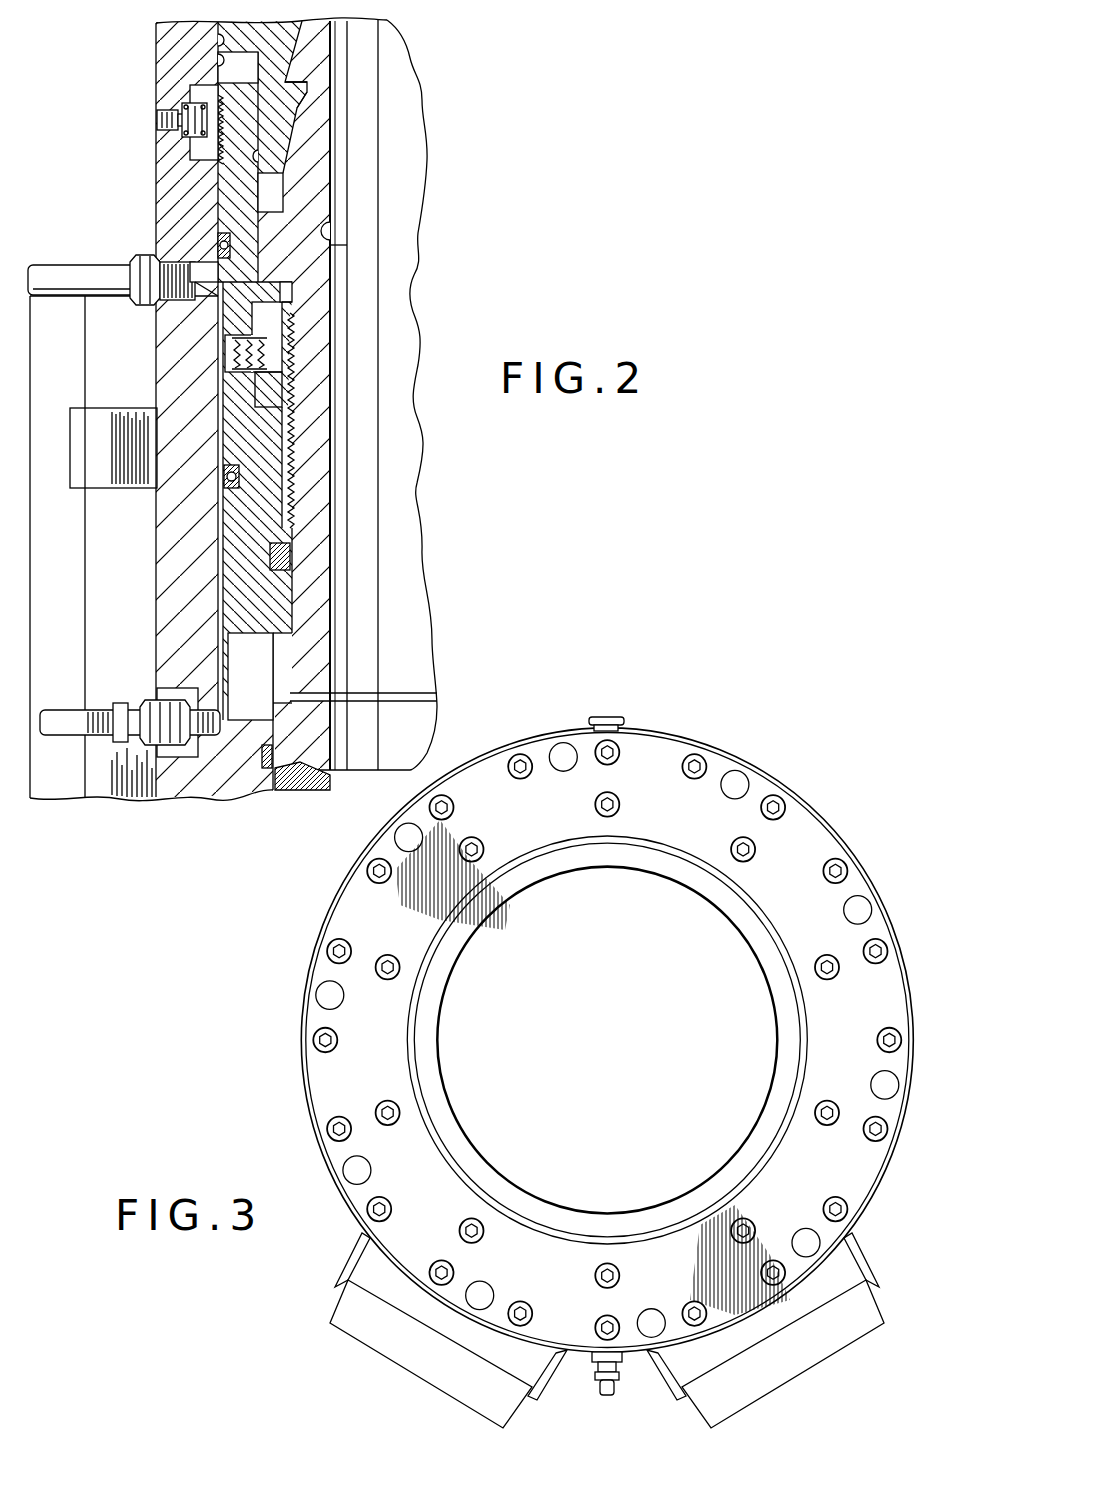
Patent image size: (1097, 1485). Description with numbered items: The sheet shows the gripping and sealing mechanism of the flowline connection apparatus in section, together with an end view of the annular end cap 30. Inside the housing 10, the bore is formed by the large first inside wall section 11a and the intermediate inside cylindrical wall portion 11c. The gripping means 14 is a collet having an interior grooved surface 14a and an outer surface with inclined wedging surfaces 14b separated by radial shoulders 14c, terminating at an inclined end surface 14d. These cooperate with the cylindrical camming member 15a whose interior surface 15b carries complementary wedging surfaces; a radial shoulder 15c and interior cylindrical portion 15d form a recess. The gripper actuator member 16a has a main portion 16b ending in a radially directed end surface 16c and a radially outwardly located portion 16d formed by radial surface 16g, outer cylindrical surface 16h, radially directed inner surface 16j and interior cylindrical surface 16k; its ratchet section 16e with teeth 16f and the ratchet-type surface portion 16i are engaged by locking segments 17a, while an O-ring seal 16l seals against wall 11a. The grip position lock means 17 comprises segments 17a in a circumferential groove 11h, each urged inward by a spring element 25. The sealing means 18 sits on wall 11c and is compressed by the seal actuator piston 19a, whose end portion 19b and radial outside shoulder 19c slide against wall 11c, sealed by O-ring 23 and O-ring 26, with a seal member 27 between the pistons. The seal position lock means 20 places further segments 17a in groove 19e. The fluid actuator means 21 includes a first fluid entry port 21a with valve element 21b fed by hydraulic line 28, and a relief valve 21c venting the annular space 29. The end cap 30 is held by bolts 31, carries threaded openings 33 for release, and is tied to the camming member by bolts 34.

In FIG. 2, the housing 10 is at (150, 593).
In FIG. 2, the first inside wall section 11a is at (213, 35).
In FIG. 2, the inside cylindrical wall portion 11c is at (287, 792).
In FIG. 2, the circumferential groove 11h is at (208, 88).
In FIG. 2, the gripping means 14 is at (322, 145).
In FIG. 2, the interior grooved surface 14a is at (332, 173).
In FIG. 2, the inclined wedging surfaces 14b is at (300, 118).
In FIG. 2, the radial shoulders 14c is at (302, 94).
In FIG. 2, the inclined end surface 14d is at (333, 245).
In FIG. 2, the cylindrical camming member 15a is at (290, 32).
In FIG. 2, the interior surface of camming member 15b is at (290, 66).
In FIG. 2, the radial shoulder 15c is at (226, 52).
In FIG. 2, the interior cylindrical portion 15d is at (255, 67).
In FIG. 2, the gripper actuator member 16a is at (302, 455).
In FIG. 2, the main portion 16b is at (317, 543).
In FIG. 2, the radially directed end surface 16c is at (330, 225).
In FIG. 2, the radially outwardly located portion 16d is at (238, 197).
In FIG. 2, the ratchet section 16e is at (293, 433).
In FIG. 2, the ratchet teeth 16f is at (278, 320).
In FIG. 2, the radial surface 16g is at (424, 278).
In FIG. 2, the outer cylindrical surface 16h is at (217, 242).
In FIG. 2, the ratchet-type surface portion 16i is at (208, 178).
In FIG. 2, the radially directed inner surface 16j is at (283, 200).
In FIG. 2, the interior cylindrical surface 16k is at (260, 156).
In FIG. 2, the O-ring seal 16l is at (218, 250).
In FIG. 2, the grip position lock means 17 is at (157, 118).
In FIG. 2, the locking segments 17a is at (272, 397).
In FIG. 2, the sealing means 18 is at (307, 783).
In FIG. 2, the seal actuator piston 19a is at (275, 612).
In FIG. 2, the seal actuator end portion 19b is at (312, 728).
In FIG. 2, the radial outside shoulder 19c is at (247, 640).
In FIG. 2, the circumferential groove 19e is at (252, 383).
In FIG. 2, the seal position lock means 20 is at (298, 381).
In FIG. 2, the fluid actuator means 21 is at (148, 310).
In FIG. 2, the first fluid entry port 21a is at (208, 293).
In FIG. 2, the valve element 21b is at (133, 288).
In FIG. 2, the relief valve 21c is at (170, 737).
In FIG. 2, the O-ring 23 is at (226, 473).
In FIG. 2, the spring element 25 is at (190, 137).
In FIG. 2, the O-ring 26 is at (267, 770).
In FIG. 2, the seal member 27 is at (287, 557).
In FIG. 2, the hydraulic line 28 is at (82, 287).
In FIG. 2, the annular space 29 is at (263, 657).
In FIG. 3, the annular end cap 30 is at (800, 841).
In FIG. 3, the bolts 31 is at (325, 1120).
In FIG. 3, the threaded openings 33 is at (733, 776).
In FIG. 3, the bolts 34 is at (609, 811).